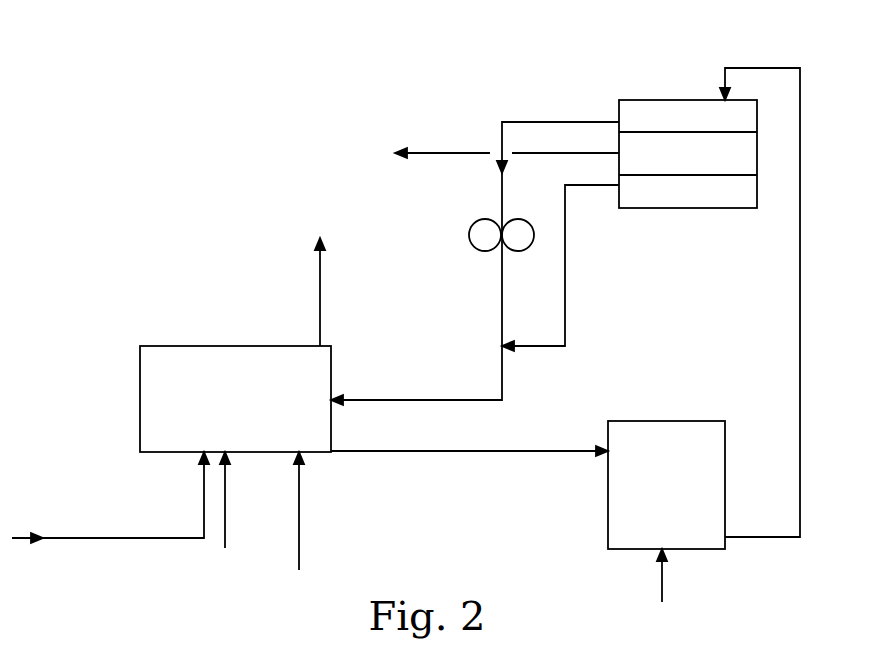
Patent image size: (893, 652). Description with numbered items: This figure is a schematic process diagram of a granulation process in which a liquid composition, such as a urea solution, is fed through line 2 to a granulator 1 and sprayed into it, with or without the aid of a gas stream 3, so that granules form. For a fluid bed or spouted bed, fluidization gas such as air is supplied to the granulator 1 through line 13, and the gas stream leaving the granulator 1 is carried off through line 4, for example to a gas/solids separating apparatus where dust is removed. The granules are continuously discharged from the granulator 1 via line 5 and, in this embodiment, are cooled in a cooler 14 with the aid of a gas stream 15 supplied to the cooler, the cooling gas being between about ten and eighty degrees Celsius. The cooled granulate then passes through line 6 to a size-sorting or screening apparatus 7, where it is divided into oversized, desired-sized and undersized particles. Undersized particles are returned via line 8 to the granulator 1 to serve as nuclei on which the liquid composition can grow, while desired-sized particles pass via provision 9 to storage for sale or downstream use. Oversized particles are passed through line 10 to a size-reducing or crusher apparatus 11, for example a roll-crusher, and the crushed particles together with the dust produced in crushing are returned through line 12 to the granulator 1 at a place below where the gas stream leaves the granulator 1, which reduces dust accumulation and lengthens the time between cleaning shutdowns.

The granulator 1 is at (162, 367).
The line 2 is at (120, 538).
The gas stream 3 is at (226, 537).
The line 4 is at (320, 270).
The line 5 is at (510, 453).
The line 6 is at (801, 270).
The size-sorting or screening apparatus 7 is at (660, 120).
The line 8 is at (567, 283).
The provision 9 is at (437, 153).
The line 10 is at (533, 121).
The size-reducing or crusher apparatus 11 is at (470, 230).
The line 12 is at (501, 282).
The line 13 is at (300, 517).
The cooler 14 is at (617, 495).
The gas stream 15 is at (663, 580).